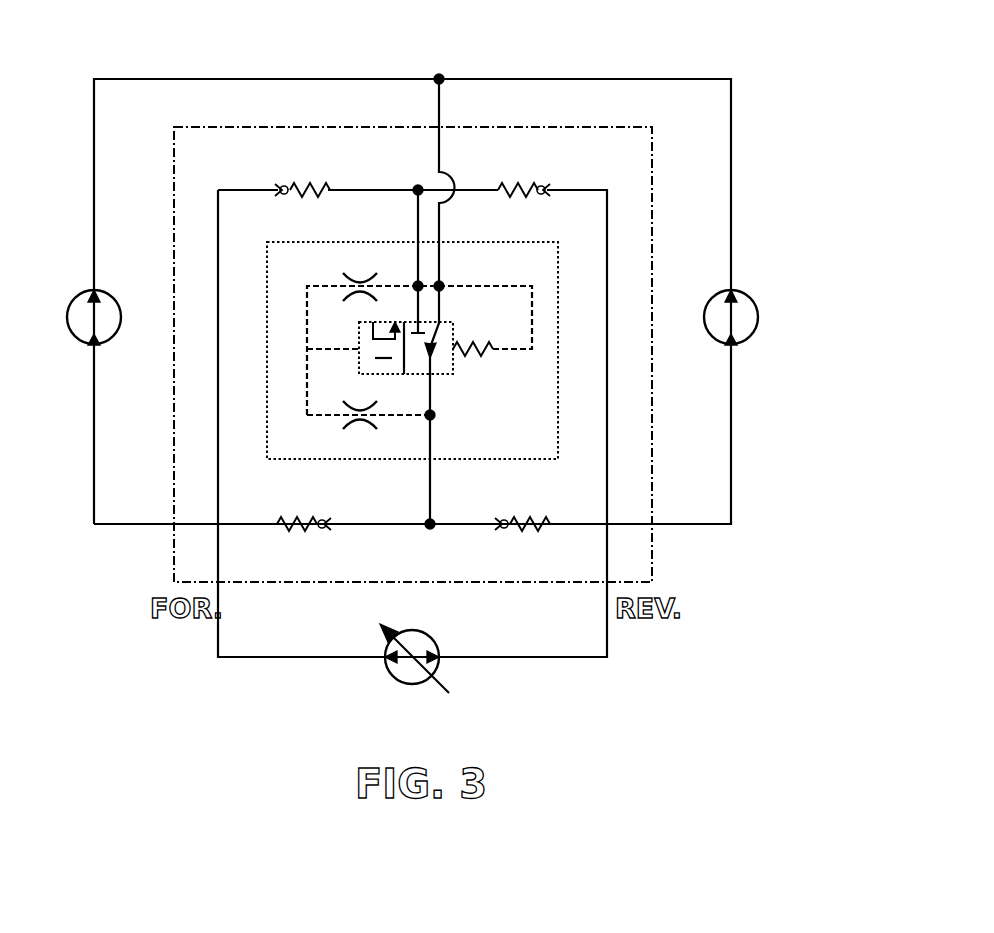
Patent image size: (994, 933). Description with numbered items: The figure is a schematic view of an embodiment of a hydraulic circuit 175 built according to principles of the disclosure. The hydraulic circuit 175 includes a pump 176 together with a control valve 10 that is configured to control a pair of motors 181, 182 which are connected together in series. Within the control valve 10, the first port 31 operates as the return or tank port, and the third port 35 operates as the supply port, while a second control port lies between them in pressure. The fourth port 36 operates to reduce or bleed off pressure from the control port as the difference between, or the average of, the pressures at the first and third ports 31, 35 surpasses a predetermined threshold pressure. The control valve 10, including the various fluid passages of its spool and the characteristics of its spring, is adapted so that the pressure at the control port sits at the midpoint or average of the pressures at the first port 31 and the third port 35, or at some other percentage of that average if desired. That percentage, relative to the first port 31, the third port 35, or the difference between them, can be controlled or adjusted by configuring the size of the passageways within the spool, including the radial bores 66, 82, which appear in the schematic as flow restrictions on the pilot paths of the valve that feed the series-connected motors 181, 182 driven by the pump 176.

The hydraulic circuit 175 is at (755, 124).
The control valve 10 is at (560, 242).
The first port 31 is at (432, 392).
The third port 35 is at (417, 284).
The fourth port 36 is at (338, 347).
The radial bore 82 is at (363, 278).
The radial bore 66 is at (358, 421).
The motor 181 is at (87, 292).
The motor 182 is at (748, 292).
The pump 176 is at (441, 665).